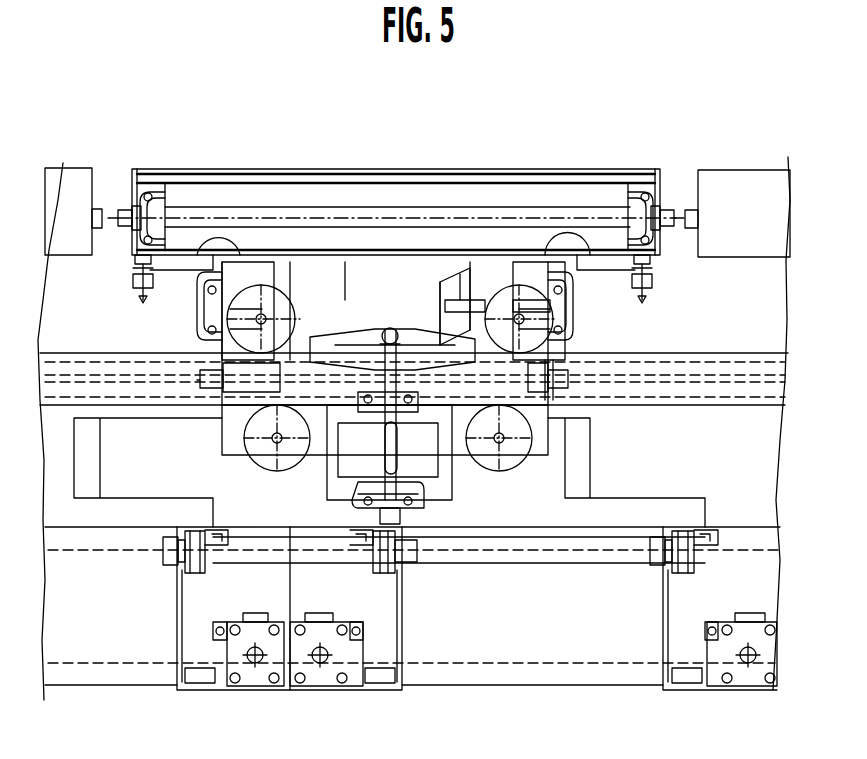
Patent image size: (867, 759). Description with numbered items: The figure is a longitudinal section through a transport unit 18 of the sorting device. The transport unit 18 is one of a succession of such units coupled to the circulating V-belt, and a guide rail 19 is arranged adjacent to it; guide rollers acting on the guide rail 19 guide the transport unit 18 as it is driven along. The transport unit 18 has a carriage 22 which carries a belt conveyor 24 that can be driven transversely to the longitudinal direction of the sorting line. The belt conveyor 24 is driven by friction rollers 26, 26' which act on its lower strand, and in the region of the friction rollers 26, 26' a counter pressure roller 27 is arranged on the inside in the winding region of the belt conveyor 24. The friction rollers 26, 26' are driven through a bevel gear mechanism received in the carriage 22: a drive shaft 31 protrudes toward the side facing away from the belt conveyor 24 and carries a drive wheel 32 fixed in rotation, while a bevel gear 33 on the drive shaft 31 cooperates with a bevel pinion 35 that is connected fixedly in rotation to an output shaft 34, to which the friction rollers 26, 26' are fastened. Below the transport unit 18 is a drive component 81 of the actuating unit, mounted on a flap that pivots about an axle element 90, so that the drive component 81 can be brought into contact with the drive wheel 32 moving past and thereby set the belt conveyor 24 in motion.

The transport unit 18 is at (78, 168).
The guide rail 19 is at (647, 388).
The carriage 22 is at (576, 352).
The belt conveyor 24 is at (254, 170).
The friction roller 26 is at (617, 295).
The friction roller 26' is at (173, 295).
The counter pressure roller 27 is at (534, 185).
The drive shaft 31 is at (375, 440).
The drive wheel 32 is at (440, 465).
The bevel gear 33 is at (390, 330).
The output shaft 34 is at (340, 300).
The bevel pinion 35 is at (448, 265).
The drive component 81 is at (125, 503).
The axle element 90 is at (340, 550).